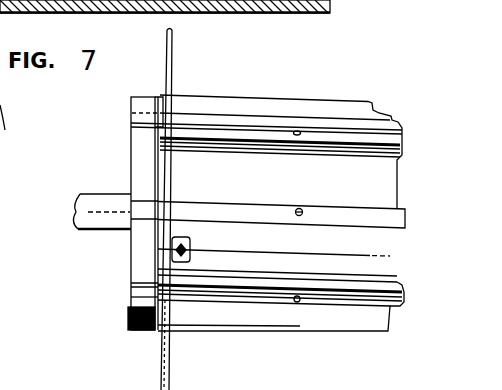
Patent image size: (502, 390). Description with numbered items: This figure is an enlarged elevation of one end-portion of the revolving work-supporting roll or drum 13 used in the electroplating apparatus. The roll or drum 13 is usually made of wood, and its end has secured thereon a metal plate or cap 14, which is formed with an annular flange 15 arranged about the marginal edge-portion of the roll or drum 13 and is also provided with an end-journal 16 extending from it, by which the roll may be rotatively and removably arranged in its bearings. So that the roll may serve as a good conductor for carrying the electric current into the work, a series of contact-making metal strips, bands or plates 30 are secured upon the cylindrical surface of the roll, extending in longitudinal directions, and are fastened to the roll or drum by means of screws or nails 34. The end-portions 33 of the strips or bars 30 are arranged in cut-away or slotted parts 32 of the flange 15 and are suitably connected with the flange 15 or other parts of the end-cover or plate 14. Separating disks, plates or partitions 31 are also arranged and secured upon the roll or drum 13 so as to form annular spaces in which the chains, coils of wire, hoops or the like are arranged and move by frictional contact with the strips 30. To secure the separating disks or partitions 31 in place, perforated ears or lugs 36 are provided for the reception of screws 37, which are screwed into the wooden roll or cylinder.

The revolving work-supporting roll or drum 13 is at (330, 110).
The plate or cap 14 is at (131, 163).
The annular flange 15 is at (150, 135).
The end-journal 16 is at (142, 227).
The metal strips, bands or plates 30 is at (268, 132).
The separating disks, plates or partitions 31 is at (175, 43).
The cut-away or slotted parts 32 is at (134, 99).
The end-portions 33 is at (140, 113).
The screws or nails 34 is at (300, 137).
The perforated ears or lugs 36 is at (193, 241).
The screws 37 is at (195, 258).